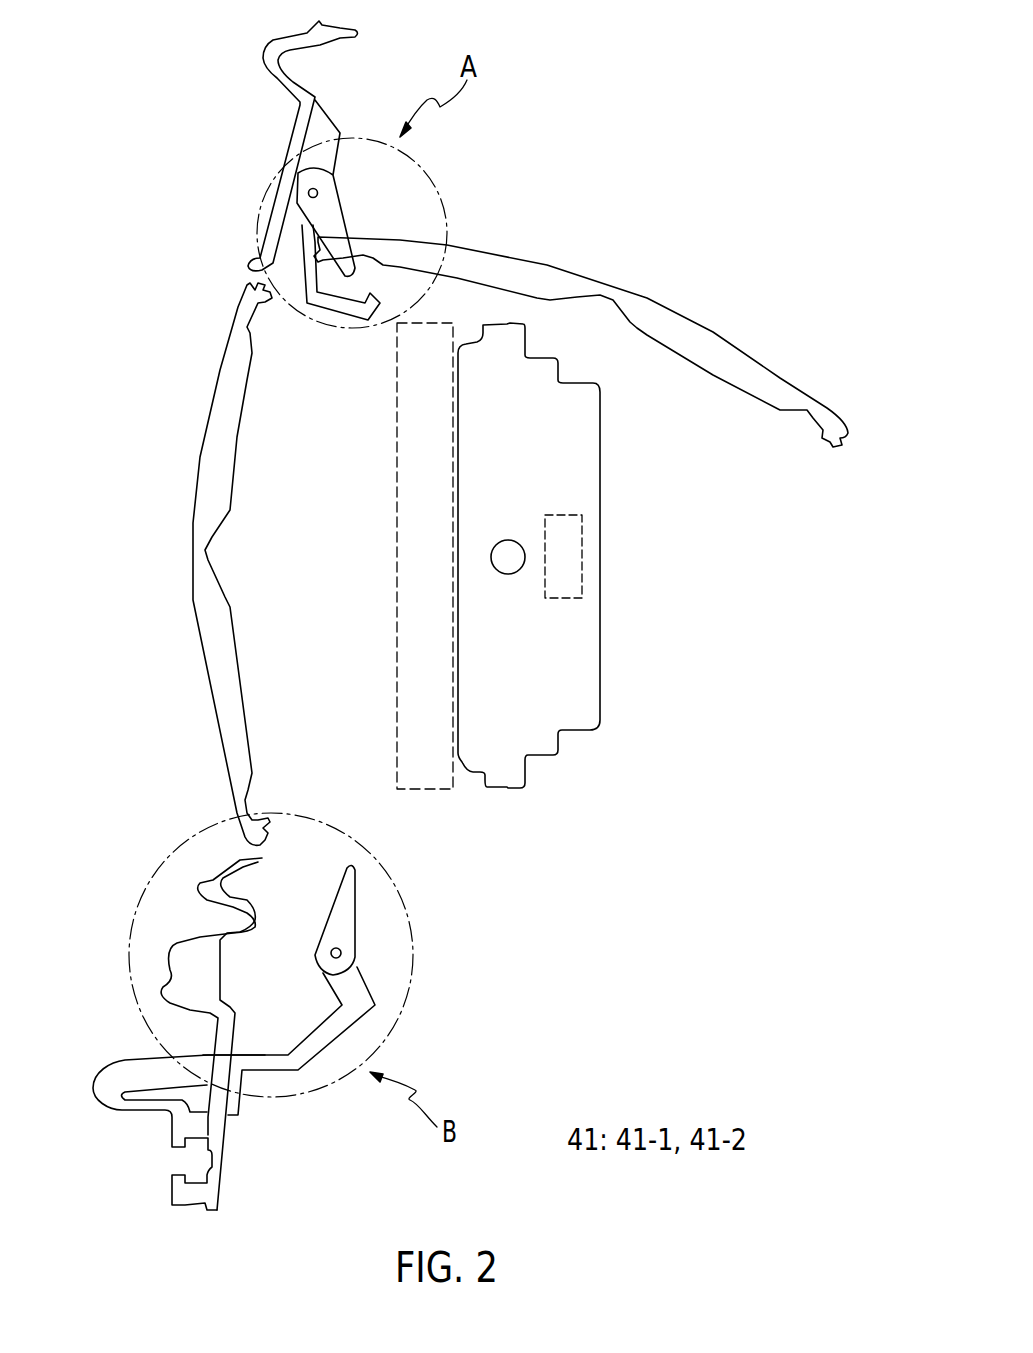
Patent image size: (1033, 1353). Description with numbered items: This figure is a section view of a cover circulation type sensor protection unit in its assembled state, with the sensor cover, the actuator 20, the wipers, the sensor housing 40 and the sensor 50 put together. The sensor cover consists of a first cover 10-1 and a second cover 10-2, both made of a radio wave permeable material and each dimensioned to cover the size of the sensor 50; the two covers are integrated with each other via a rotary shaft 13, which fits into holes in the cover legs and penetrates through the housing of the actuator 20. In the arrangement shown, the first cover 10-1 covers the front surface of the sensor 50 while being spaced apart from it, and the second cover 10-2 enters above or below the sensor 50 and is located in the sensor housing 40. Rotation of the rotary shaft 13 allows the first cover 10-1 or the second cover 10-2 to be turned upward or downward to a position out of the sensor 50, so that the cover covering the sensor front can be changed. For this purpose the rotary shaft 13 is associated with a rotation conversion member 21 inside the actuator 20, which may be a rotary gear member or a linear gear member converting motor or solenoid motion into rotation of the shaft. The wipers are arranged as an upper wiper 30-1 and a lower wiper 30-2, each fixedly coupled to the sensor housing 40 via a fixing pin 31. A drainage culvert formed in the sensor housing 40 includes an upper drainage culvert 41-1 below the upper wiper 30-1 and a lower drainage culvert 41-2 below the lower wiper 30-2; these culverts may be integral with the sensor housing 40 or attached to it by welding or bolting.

The first cover 10-1 is at (220, 693).
The second cover 10-2 is at (702, 340).
The rotary shaft 13 is at (508, 557).
The actuator 20 is at (578, 662).
The rotation conversion member 21 is at (562, 532).
The upper wiper 30-1 is at (335, 203).
The lower wiper 30-2 is at (347, 915).
The fixing pin 31 is at (309, 192).
The sensor housing 40 is at (265, 50).
The upper drainage culvert 41-1 is at (326, 322).
The lower drainage culvert 41-2 is at (337, 1020).
The sensor 50 is at (397, 598).